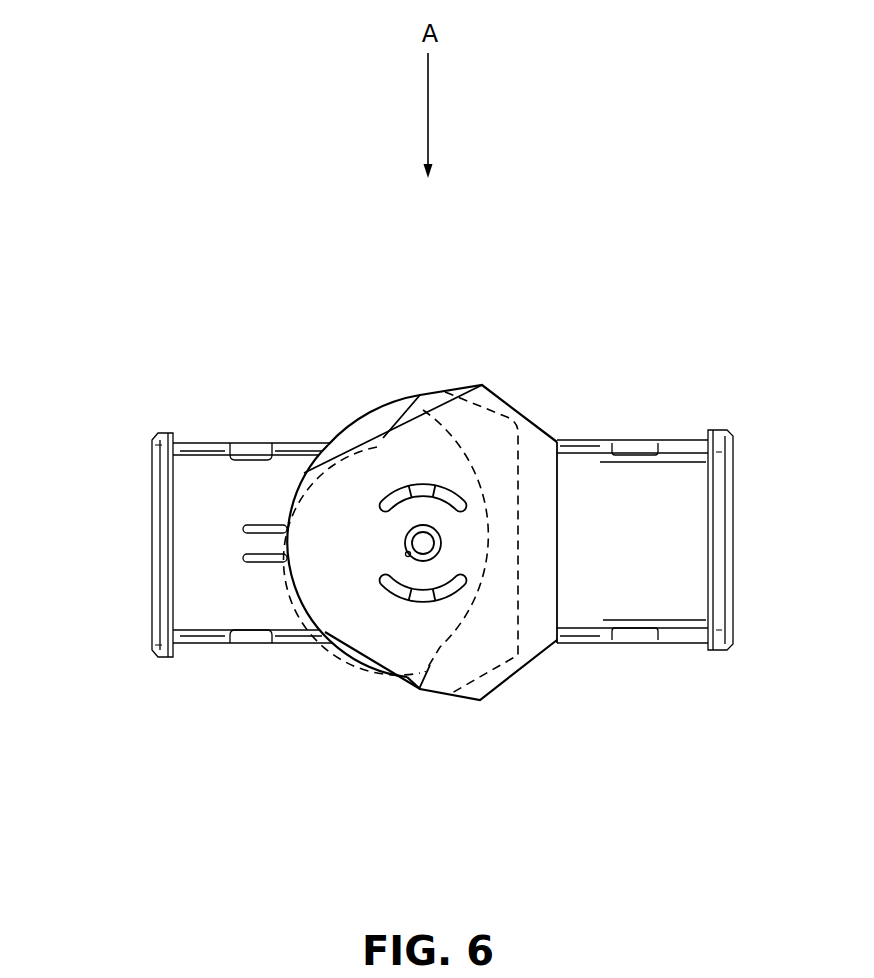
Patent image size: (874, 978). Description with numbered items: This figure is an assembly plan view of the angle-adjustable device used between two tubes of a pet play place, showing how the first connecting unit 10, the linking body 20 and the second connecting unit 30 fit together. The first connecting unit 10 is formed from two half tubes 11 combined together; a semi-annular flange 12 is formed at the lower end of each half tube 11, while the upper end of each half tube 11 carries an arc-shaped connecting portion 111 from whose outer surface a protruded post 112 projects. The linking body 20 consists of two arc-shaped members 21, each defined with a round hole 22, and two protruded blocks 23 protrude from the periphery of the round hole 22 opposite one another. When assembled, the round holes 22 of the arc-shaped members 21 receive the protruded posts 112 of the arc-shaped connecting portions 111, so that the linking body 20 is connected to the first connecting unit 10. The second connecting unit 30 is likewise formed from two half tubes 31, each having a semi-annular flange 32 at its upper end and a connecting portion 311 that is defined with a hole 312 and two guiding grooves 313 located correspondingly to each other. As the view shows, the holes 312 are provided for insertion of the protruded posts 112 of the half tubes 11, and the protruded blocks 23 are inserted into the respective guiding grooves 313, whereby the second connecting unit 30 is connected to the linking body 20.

The first connecting unit 10 is at (211, 572).
The half tube 11 is at (200, 467).
The semi-annular flange 12 is at (165, 625).
The arc-shaped connecting portion 111 is at (382, 422).
The protruded post 112 is at (443, 540).
The linking body 20 is at (460, 542).
The arc-shaped member 21 is at (522, 398).
The round hole 22 is at (447, 553).
The protruded block 23 is at (422, 482).
The second connecting unit 30 is at (577, 552).
The half tube 31 is at (693, 623).
The semi-annular flange 32 is at (718, 538).
The connecting portion 311 is at (385, 667).
The hole 312 is at (404, 556).
The guiding groove 313 is at (392, 488).